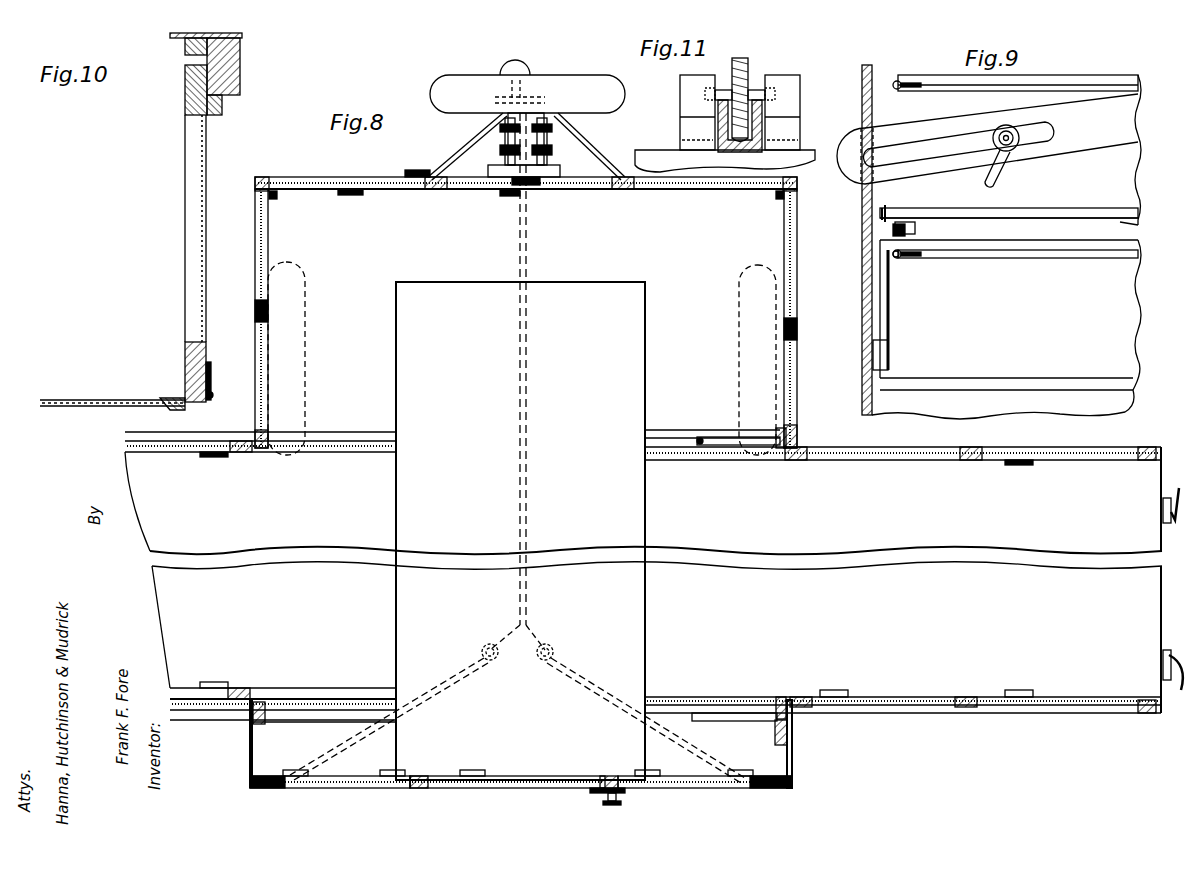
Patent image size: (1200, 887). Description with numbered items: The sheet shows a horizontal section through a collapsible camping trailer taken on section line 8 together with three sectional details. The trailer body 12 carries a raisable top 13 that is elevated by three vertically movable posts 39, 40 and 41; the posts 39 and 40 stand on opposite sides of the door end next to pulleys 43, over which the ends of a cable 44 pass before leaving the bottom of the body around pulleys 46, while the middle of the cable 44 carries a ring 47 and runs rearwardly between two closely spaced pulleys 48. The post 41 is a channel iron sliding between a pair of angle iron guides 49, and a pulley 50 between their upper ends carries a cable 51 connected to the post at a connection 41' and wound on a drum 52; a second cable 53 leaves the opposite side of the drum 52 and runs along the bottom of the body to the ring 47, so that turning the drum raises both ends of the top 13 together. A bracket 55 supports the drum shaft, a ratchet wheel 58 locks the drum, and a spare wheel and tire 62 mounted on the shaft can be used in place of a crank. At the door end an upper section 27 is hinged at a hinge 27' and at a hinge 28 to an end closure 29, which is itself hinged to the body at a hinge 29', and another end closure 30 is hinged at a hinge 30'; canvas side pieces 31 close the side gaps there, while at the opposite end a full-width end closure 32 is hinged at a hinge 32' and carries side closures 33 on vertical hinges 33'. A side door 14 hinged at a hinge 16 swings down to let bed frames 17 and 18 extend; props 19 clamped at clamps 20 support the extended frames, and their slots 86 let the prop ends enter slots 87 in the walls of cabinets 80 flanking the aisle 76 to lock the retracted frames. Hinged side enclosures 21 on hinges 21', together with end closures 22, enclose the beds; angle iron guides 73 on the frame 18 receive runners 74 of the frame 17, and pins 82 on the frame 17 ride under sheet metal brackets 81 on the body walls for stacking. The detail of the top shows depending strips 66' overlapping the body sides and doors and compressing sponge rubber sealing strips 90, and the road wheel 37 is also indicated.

In FIG. 8, the section line 8— 8 is at (683, 430).
In FIG. 10, the trailer body 12 is at (210, 405).
In FIG. 11, the trailer body 12 is at (655, 150).
In FIG. 8, the trailer body 12 is at (793, 750).
In FIG. 10, the raisable top 13 is at (242, 38).
In FIG. 10, the side door 14 is at (206, 137).
In FIG. 10, the hinge 16 is at (211, 390).
In FIG. 9, the bed frame 17 is at (1125, 178).
In FIG. 9, the bed frame 18 is at (1130, 318).
In FIG. 9, the prop 19 is at (1082, 142).
In FIG. 8, the prop 19 is at (1170, 550).
In FIG. 9, the clamp 20 is at (1006, 126).
In FIG. 8, the clamp 20 is at (1178, 530).
In FIG. 9, the hinged side enclosure 21 is at (1015, 170).
In FIG. 8, the hinged side enclosure 21 is at (1060, 435).
In FIG. 9, the hinge 21' is at (919, 265).
In FIG. 8, the hinge 21' is at (973, 481).
In FIG. 8, the end closure 22 is at (1163, 605).
In FIG. 8, the upper section 27 is at (507, 799).
In FIG. 8, the hinge 27' is at (487, 765).
In FIG. 8, the hinge 28 is at (610, 788).
In FIG. 8, the end closure 29 is at (705, 799).
In FIG. 8, the hinge 29' is at (660, 765).
In FIG. 8, the end closure 30 is at (330, 797).
In FIG. 8, the hinge 30' is at (407, 760).
In FIG. 8, the side piece of canvas 31 is at (793, 772).
In FIG. 8, the end closure 32 is at (526, 168).
In FIG. 8, the hinge 32' is at (384, 199).
In FIG. 8, the side closure 33 is at (526, 318).
In FIG. 8, the hinge 33' is at (526, 210).
In FIG. 8, the wheel 37 is at (306, 293).
In FIG. 8, the post 39 is at (255, 788).
In FIG. 8, the post 40 is at (787, 788).
In FIG. 11, the post 41 is at (733, 170).
In FIG. 8, the post 41 is at (509, 200).
In FIG. 11, the cable connection 41' is at (765, 100).
In FIG. 8, the pulley 43 is at (290, 781).
In FIG. 8, the cable 44 is at (375, 727).
In FIG. 8, the pulley 46 is at (298, 768).
In FIG. 8, the ring 47 is at (528, 612).
In FIG. 8, the pulley 48 is at (481, 645).
In FIG. 11, the angle iron guide 49 is at (783, 138).
In FIG. 8, the angle iron guide 49 is at (550, 182).
In FIG. 11, the pulley 50 is at (750, 68).
In FIG. 8, the pulley 50 is at (505, 155).
In FIG. 11, the cable 51 is at (740, 58).
In FIG. 8, the drum 52 is at (480, 128).
In FIG. 8, the cable 53 is at (527, 452).
In FIG. 8, the bracket 55 is at (586, 142).
In FIG. 8, the ratchet wheel 58 is at (548, 152).
In FIG. 8, the spare wheel and tire 62 is at (565, 75).
In FIG. 10, the depending strip 66' is at (235, 76).
In FIG. 9, the angle iron guide 73 is at (893, 230).
In FIG. 9, the runner 74 is at (915, 230).
In FIG. 8, the aisle 76 is at (646, 676).
In FIG. 10, the cabinet 80 is at (137, 398).
In FIG. 8, the cabinet 80 is at (396, 737).
In FIG. 9, the sheet metal bracket 81 is at (889, 312).
In FIG. 8, the sheet metal bracket 81 is at (725, 445).
In FIG. 8, the roller or pin 82 is at (786, 445).
In FIG. 9, the slot 86 is at (874, 72).
In FIG. 9, the slot 87 is at (858, 125).
In FIG. 10, the sponge rubber sealing strip 90 is at (222, 100).